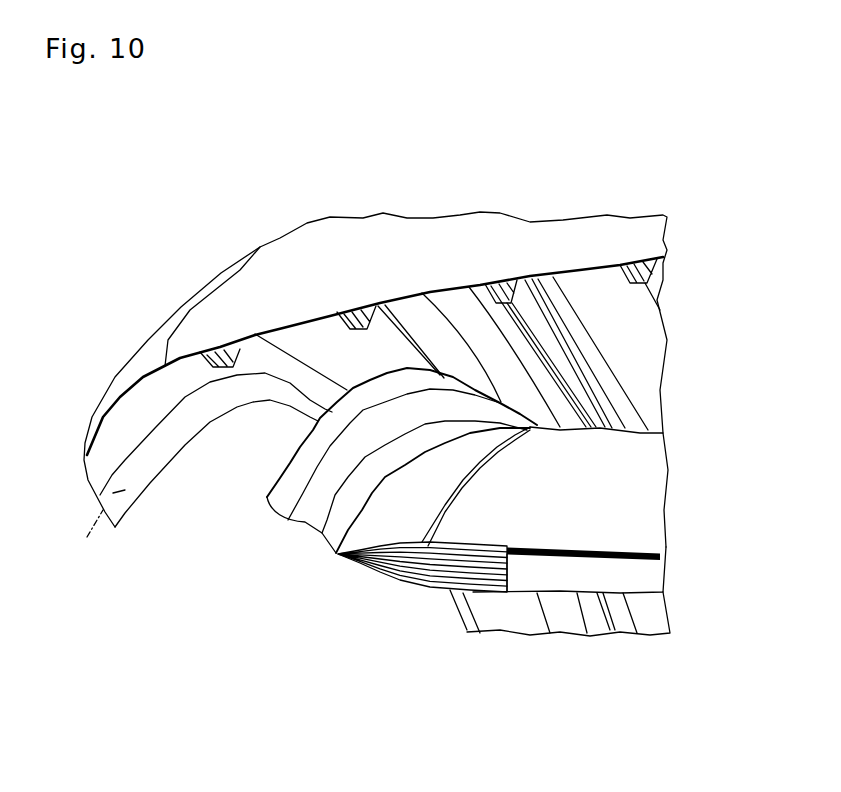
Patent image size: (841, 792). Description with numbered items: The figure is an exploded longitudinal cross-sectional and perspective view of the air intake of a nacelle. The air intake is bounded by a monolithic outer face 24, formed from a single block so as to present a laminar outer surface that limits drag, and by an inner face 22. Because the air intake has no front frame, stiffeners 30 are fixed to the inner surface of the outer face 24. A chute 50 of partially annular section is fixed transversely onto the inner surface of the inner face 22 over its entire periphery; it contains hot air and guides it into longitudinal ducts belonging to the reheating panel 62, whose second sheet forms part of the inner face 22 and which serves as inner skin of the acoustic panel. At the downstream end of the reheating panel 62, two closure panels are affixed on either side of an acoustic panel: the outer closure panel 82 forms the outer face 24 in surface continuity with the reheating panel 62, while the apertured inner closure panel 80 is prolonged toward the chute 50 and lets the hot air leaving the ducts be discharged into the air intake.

The inner face 22 is at (613, 640).
The outer face 24 is at (353, 242).
The stiffeners 30 is at (507, 300).
The chute 50 is at (320, 500).
The reheating panel 62 is at (413, 583).
The inner closure panel 80 is at (523, 577).
The outer closure panel 82 is at (580, 517).